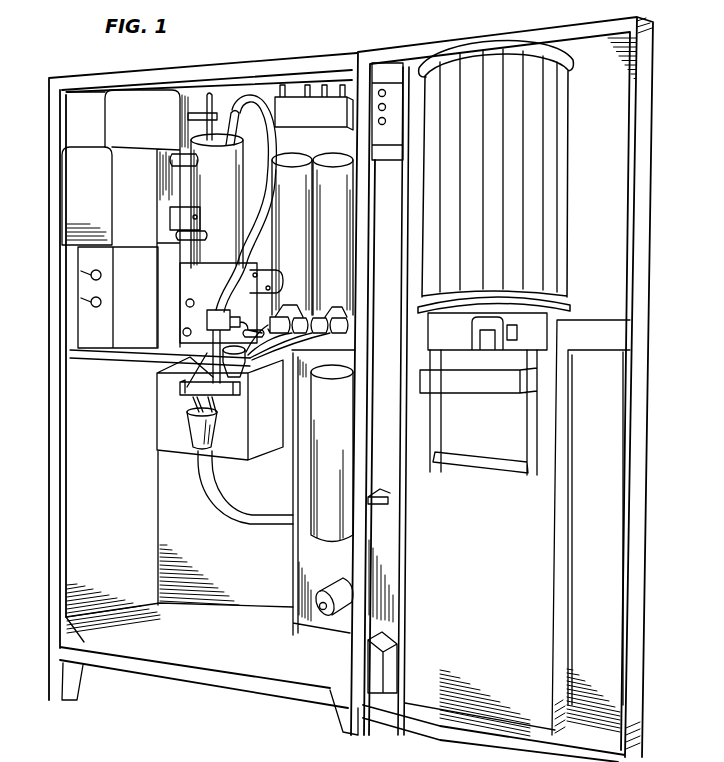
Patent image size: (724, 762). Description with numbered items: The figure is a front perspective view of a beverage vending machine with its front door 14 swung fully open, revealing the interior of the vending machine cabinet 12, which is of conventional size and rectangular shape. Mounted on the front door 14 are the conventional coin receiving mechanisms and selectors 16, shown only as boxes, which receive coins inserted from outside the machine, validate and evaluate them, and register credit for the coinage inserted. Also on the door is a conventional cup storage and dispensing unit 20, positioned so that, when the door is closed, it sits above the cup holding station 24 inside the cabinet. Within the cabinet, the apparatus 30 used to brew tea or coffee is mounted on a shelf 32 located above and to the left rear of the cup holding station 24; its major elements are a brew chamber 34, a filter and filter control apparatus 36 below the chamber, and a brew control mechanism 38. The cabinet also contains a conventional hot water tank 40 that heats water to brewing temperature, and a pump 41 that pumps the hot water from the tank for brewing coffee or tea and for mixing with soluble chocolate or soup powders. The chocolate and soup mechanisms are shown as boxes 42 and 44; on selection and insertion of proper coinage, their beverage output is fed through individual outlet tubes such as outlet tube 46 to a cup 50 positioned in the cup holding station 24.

The vending machine cabinet 12 is at (257, 58).
The front door 14 is at (620, 163).
The coin receiving mechanisms and selectors 16 is at (380, 543).
The cup storage and dispensing unit 20 is at (480, 58).
The cup holding station 24 is at (157, 403).
The brewing apparatus 30 is at (200, 173).
The shelf 32 is at (75, 327).
The brew chamber 34 is at (260, 156).
The filter and filter control apparatus 36 is at (186, 292).
The brew control mechanism 38 is at (77, 188).
The hot water tank 40 is at (337, 417).
The pump 41 is at (330, 612).
The chocolate mechanism 42 is at (298, 228).
The soup mechanism 44 is at (343, 228).
The outlet tube 46 is at (262, 363).
The cup 50 is at (193, 429).